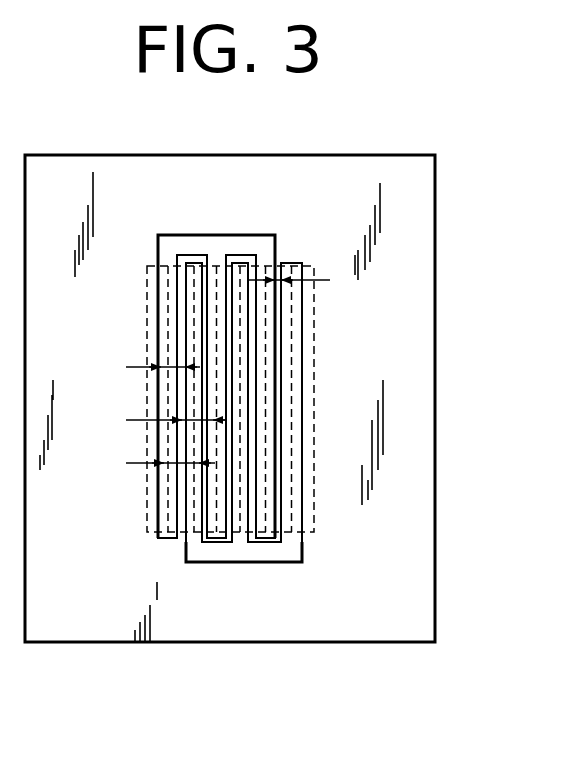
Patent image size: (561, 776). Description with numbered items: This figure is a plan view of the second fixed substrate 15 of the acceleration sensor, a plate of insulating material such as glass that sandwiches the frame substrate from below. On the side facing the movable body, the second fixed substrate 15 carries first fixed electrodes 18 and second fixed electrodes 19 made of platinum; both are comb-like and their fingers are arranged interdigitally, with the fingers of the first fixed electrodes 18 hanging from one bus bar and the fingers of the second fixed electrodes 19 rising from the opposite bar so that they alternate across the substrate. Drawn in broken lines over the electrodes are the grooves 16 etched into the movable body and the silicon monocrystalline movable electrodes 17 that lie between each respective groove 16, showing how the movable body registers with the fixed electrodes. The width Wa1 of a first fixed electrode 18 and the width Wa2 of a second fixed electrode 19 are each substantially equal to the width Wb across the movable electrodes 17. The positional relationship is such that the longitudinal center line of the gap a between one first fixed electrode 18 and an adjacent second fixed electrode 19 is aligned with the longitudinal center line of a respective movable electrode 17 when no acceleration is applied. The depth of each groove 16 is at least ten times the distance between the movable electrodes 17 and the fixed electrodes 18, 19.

The second fixed substrate 15 is at (394, 592).
The grooves 16 is at (317, 497).
The movable electrodes 17 is at (265, 337).
The first fixed electrodes 18 is at (176, 540).
The second fixed electrodes 19 is at (234, 552).
The gap a is at (287, 259).
The width of first fixed electrode Wa1 is at (174, 367).
The width of second fixed electrode Wa2 is at (188, 420).
The width across movable electrodes Wb is at (179, 463).